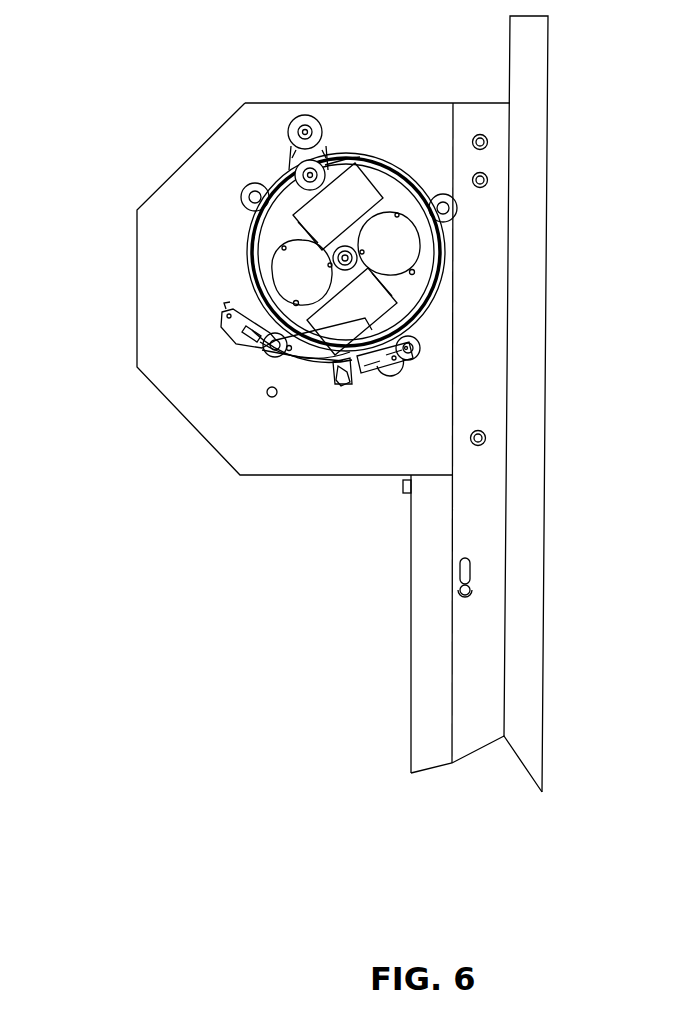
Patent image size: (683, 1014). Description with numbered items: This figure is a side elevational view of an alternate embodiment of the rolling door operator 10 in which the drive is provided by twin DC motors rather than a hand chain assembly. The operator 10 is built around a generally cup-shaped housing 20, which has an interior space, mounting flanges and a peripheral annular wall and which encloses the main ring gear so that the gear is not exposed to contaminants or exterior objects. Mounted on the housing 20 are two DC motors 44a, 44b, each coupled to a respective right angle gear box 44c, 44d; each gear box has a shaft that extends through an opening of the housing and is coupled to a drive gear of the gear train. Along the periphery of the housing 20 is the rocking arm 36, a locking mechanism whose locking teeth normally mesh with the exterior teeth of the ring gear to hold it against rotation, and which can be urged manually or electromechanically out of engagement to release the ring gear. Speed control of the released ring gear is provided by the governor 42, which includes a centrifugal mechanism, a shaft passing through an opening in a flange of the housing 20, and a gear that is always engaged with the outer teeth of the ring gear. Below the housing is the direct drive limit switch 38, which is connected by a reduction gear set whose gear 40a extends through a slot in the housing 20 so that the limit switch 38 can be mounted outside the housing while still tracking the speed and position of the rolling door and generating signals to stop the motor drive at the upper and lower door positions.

The operator 10 is at (212, 247).
The housing 20 is at (388, 158).
The rocking arm 36 is at (227, 342).
The direct drive limit switch 38 is at (394, 388).
The gear 40a is at (400, 362).
The governor 42 is at (315, 110).
The DC motor 44a is at (317, 218).
The DC motor 44b is at (342, 327).
The right angle gear box 44c is at (292, 268).
The right angle gear box 44d is at (395, 250).